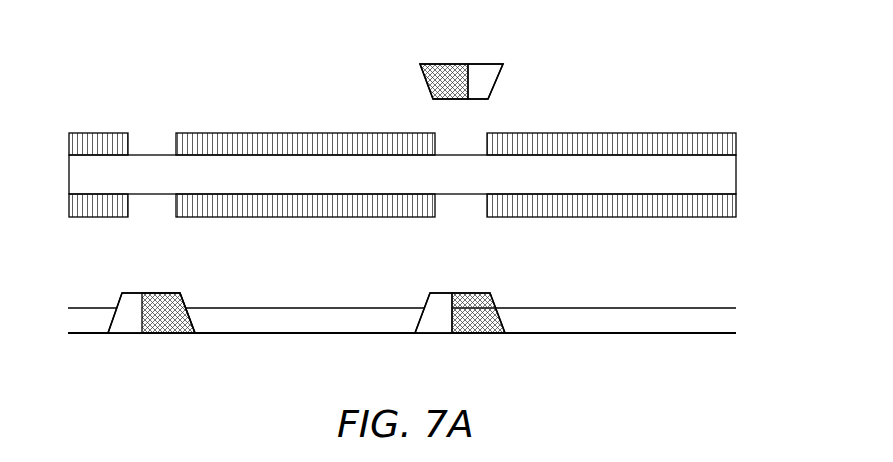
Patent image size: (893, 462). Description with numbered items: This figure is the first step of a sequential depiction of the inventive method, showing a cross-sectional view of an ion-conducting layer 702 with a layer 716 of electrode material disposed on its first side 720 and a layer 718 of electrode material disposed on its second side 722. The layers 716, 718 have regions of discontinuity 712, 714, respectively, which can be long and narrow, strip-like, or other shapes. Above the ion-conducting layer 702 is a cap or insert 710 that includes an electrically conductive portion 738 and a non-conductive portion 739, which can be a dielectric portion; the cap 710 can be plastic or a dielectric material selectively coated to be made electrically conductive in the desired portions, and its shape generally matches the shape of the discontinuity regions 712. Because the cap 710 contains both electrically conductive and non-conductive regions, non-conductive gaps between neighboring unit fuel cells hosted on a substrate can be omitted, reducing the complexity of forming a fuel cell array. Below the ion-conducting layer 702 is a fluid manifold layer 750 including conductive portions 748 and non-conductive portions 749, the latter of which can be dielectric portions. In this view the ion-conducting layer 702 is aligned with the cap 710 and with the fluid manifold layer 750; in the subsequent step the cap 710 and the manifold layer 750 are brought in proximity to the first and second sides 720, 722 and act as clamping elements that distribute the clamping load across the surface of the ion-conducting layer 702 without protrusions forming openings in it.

The ion-conducting layer 702 is at (82, 179).
The cap 710 is at (469, 55).
The region of discontinuity 712 is at (150, 142).
The region of discontinuity 714 is at (453, 208).
The layer of electrode material 716 is at (100, 138).
The layer of electrode material 718 is at (100, 215).
The first side 720 is at (710, 155).
The second side 722 is at (710, 194).
The electrically conductive portion 738 is at (438, 85).
The non-conductive portion 739 is at (483, 86).
The conductive portion 748 is at (482, 320).
The non-conductive portion 749 is at (437, 320).
The fluid manifold layer 750 is at (402, 339).